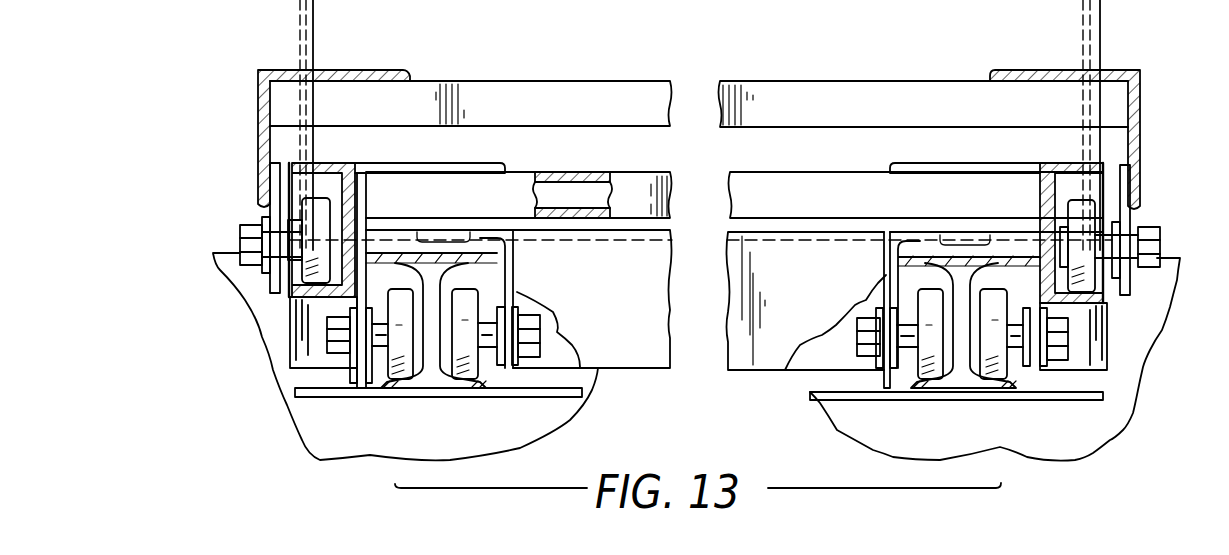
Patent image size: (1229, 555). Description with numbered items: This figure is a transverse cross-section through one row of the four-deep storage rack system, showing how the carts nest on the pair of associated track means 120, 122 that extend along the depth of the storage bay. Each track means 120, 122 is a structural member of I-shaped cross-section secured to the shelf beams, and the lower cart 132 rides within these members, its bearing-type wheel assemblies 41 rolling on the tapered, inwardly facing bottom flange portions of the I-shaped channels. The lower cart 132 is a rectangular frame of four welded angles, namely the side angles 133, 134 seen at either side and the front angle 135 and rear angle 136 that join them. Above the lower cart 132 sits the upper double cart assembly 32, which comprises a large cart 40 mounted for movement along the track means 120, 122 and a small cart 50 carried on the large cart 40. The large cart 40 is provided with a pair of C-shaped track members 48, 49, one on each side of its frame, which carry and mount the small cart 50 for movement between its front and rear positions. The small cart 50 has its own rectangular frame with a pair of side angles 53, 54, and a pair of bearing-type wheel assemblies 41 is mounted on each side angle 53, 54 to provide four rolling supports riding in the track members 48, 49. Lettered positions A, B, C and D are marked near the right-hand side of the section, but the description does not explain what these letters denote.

The double cart assembly 32 is at (421, 146).
The side angle 54 is at (258, 100).
The wheel assembly 41 is at (240, 230).
The track member 49 is at (313, 174).
The side angle 134 is at (506, 246).
The front angle 135 is at (553, 337).
The rear angle 136 is at (636, 329).
The track means 120 is at (447, 392).
The small cart 50 is at (802, 80).
The side angle 53 is at (1142, 92).
The large cart 40 is at (764, 172).
The track member 48 is at (1048, 176).
The side angle 133 is at (883, 254).
The lower cart 132 is at (743, 370).
The track means 122 is at (920, 394).
The reference point A is at (1122, 245).
The reference point B is at (1098, 182).
The reference point C is at (1083, 108).
The reference point D is at (1082, 42).